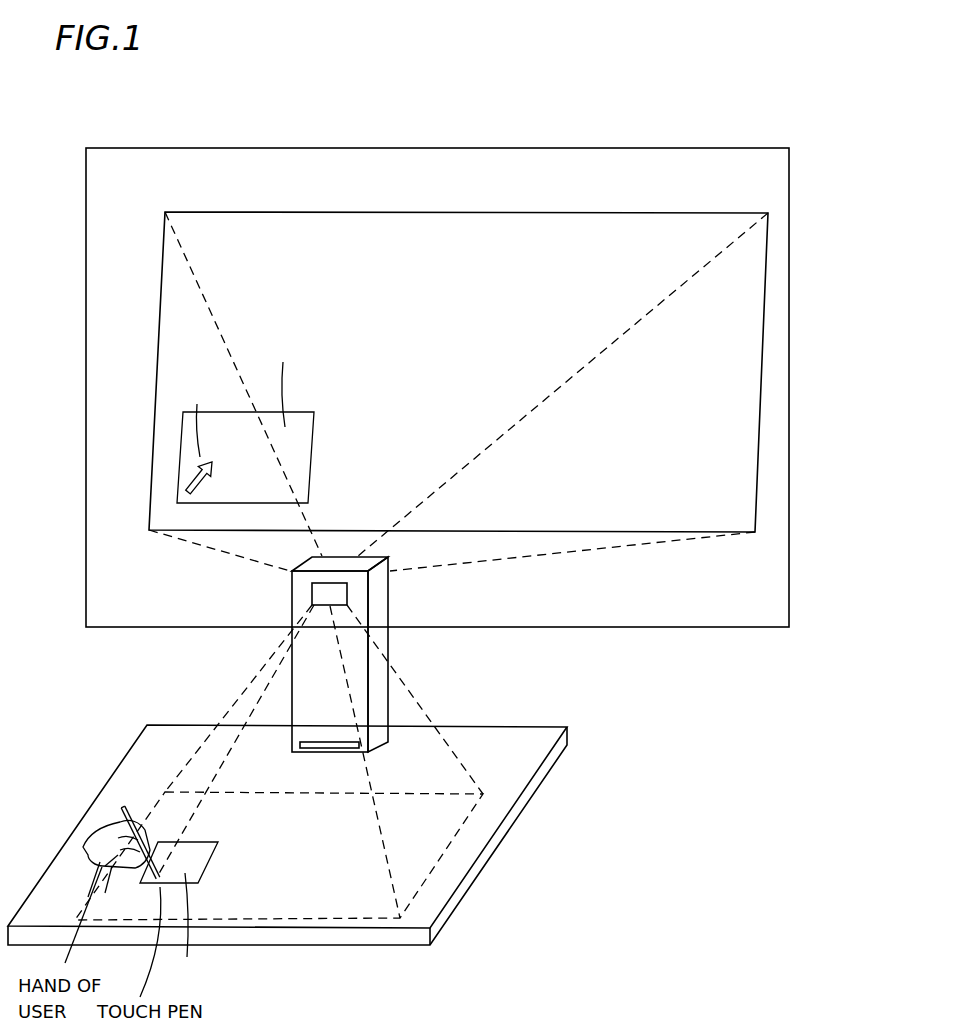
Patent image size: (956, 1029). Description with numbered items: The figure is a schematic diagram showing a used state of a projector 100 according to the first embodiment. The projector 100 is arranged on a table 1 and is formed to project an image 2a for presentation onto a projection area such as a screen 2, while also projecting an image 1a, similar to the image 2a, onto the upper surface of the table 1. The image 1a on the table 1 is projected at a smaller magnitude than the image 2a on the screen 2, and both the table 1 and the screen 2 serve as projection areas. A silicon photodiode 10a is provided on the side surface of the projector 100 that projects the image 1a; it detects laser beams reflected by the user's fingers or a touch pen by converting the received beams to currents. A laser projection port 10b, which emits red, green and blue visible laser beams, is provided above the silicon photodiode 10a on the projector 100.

The table 1 is at (513, 782).
The image 1a is at (420, 830).
The screen 2 is at (636, 170).
The image for presentation 2a is at (556, 232).
The projector 100 is at (415, 668).
The silicon photodiode 10a is at (316, 750).
The laser projection port 10b is at (330, 593).